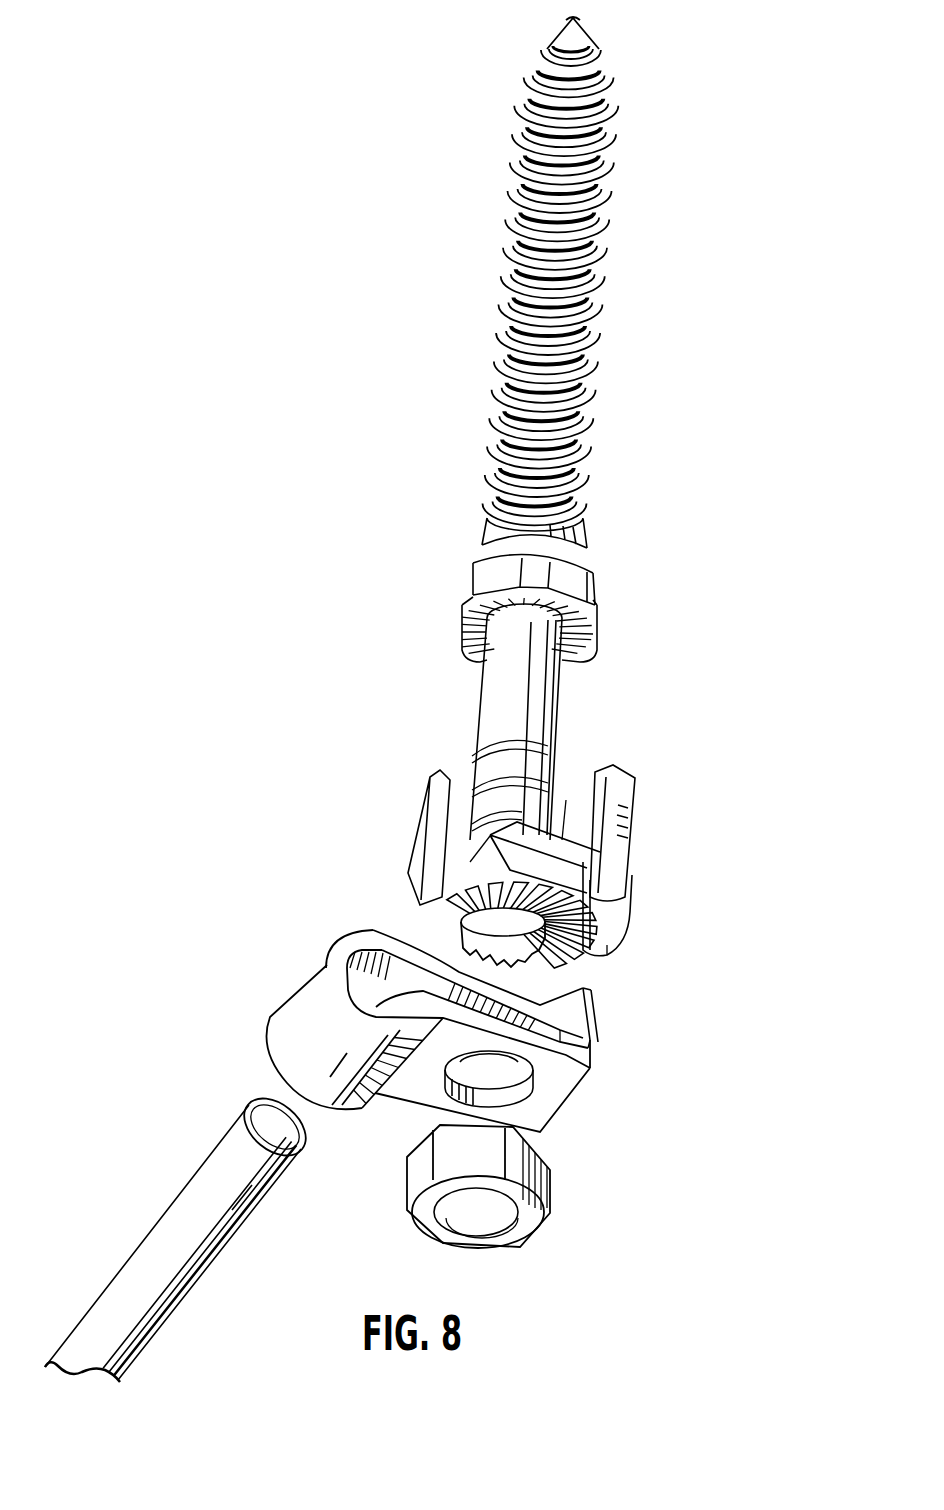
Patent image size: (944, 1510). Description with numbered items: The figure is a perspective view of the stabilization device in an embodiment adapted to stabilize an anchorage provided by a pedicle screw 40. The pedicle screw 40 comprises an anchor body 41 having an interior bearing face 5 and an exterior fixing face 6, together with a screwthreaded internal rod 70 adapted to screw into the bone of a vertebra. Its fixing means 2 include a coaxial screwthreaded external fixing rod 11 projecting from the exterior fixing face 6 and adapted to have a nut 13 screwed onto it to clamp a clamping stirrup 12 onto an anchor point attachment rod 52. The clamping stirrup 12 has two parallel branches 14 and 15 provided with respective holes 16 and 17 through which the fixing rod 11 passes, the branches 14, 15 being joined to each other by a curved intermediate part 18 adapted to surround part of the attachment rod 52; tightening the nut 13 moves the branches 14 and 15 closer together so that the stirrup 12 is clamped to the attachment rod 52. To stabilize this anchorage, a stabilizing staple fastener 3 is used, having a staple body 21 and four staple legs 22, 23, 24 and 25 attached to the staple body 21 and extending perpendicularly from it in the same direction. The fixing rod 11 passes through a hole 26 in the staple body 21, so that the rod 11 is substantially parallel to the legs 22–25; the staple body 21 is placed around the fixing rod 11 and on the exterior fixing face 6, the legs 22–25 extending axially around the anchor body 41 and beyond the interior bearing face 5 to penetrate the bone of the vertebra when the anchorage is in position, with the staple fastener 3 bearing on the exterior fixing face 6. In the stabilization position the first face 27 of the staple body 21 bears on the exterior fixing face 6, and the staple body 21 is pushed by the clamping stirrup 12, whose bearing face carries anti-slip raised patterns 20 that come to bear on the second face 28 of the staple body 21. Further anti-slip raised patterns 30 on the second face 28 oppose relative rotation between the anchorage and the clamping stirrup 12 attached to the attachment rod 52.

The fixing means 2 is at (449, 1059).
The stabilizing staple fastener 3 is at (537, 845).
The interior bearing face 5 is at (533, 594).
The exterior fixing face 6 is at (582, 638).
The fixing rod 11 is at (487, 722).
The clamping stirrup 12 is at (449, 1031).
The nut 13 is at (551, 1171).
The branch 14 is at (578, 1008).
The branch 15 is at (527, 1086).
The hole 16 is at (584, 988).
The hole 17 is at (503, 1098).
The curved intermediate part 18 is at (348, 972).
The anti-slip raised patterns 20 is at (567, 982).
The staple body 21 is at (597, 905).
The staple leg 22 is at (426, 792).
The staple leg 23 is at (612, 931).
The staple leg 24 is at (512, 752).
The staple leg 25 is at (627, 795).
The hole 26 is at (470, 913).
The first face 27 is at (565, 838).
The second face 28 is at (483, 867).
The anti-slip raised patterns 30 is at (487, 946).
The pedicle screw 40 is at (513, 282).
The anchor body 41 is at (487, 577).
The attachment rod 52 is at (220, 1232).
The screwthreaded internal rod 70 is at (497, 357).